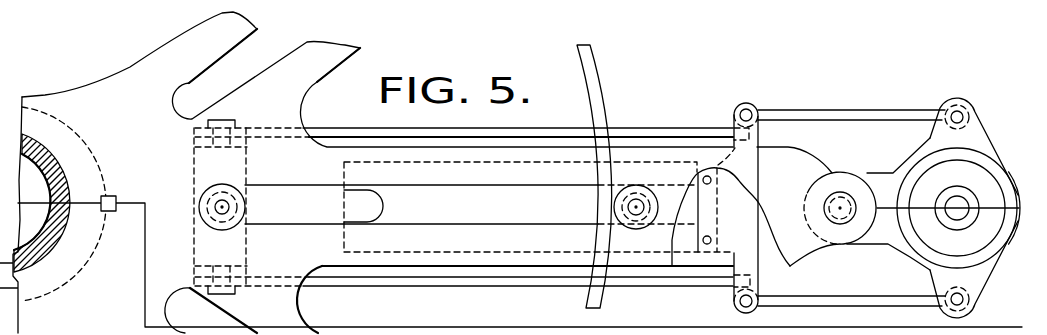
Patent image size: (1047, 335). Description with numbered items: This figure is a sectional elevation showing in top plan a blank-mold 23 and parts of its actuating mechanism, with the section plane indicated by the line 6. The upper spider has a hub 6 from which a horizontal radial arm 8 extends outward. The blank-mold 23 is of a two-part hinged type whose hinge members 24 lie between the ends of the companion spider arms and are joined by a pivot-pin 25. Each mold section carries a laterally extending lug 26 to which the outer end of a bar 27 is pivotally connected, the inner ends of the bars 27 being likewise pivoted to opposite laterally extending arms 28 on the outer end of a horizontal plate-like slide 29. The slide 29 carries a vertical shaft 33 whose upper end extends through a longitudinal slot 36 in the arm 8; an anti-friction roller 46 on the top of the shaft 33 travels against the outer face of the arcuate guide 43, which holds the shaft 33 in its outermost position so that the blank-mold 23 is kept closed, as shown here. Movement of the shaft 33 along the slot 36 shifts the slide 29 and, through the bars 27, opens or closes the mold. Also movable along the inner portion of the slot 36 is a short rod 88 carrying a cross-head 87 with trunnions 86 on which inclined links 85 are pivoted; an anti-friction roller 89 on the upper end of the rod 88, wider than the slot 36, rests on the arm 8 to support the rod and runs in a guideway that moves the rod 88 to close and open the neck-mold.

The hub 6 is at (18, 203).
The radial arm 8 is at (326, 70).
The blank-mold 23 is at (910, 257).
The hinge member 24 is at (879, 174).
The pivot-pin 25 is at (840, 205).
The lug 26 is at (943, 128).
The bar 27 is at (822, 115).
The arm 28 is at (740, 107).
The slide 29 is at (388, 207).
The vertical shaft 33 is at (643, 203).
The slot 36 is at (296, 188).
The guide 43 is at (599, 105).
The anti-friction roller 46 is at (625, 219).
The inclined link 85 is at (663, 131).
The trunnion 86 is at (237, 127).
The cross-head 87 is at (194, 243).
The short rod 88 is at (199, 207).
The anti-friction roller 89 is at (245, 207).